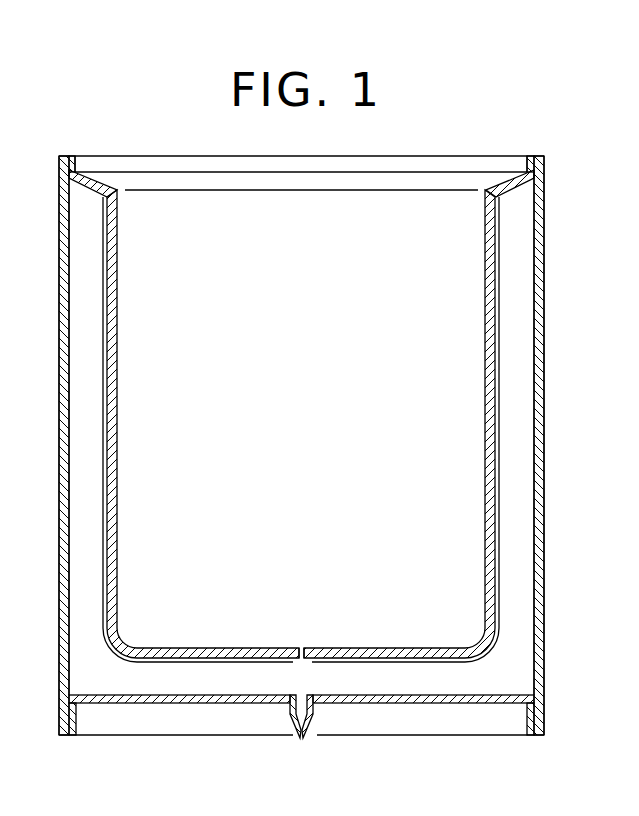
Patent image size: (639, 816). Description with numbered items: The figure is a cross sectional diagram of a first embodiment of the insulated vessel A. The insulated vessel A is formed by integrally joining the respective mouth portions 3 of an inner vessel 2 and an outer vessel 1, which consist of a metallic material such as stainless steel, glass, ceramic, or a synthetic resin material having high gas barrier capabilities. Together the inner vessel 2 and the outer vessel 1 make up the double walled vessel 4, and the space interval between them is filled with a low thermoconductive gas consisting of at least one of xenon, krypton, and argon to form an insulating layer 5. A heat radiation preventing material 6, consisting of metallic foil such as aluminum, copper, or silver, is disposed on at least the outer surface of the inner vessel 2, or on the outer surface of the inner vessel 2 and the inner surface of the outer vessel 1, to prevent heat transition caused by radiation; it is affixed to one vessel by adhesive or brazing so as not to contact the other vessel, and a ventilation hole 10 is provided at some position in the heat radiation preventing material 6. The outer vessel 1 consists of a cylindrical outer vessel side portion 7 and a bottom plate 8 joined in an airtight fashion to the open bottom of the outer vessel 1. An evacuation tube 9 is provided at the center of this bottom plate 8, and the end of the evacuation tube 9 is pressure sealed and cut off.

The insulated vessel A is at (53, 223).
The outer vessel 1 is at (545, 250).
The inner vessel 2 is at (497, 270).
The mouth portion 3 is at (549, 160).
The double walled vessel 4 is at (600, 205).
The insulating layer 5 is at (515, 547).
The heat radiation preventing material 6 is at (500, 341).
The outer vessel side portion 7 is at (544, 640).
The bottom plate 8 is at (502, 694).
The evacuation tube 9 is at (314, 716).
The ventilation hole 10 is at (301, 646).